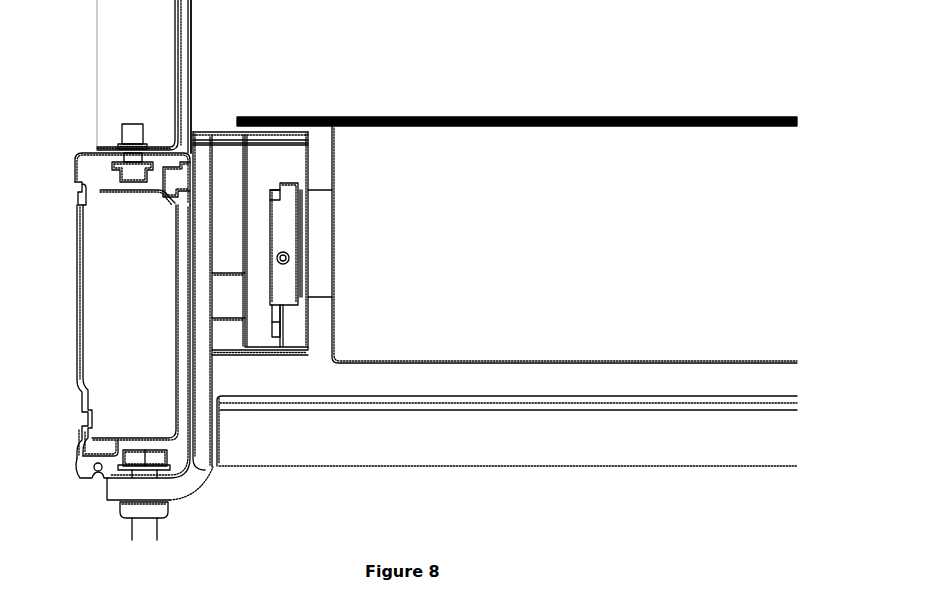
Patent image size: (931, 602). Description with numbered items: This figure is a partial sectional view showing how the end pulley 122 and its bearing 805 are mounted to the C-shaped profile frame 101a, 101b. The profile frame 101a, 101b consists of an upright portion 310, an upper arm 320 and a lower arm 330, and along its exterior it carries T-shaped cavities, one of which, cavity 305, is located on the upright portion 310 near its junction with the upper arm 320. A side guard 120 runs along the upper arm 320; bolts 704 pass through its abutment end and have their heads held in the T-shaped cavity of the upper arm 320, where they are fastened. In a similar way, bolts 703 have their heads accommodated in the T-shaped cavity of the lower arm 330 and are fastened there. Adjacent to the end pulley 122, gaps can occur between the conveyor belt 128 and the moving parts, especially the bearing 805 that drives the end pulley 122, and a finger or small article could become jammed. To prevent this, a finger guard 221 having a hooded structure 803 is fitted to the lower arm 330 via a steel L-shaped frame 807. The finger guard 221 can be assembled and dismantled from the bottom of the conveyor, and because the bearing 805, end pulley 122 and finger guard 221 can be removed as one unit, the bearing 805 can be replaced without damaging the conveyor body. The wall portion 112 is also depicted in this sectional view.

The side guard 120 is at (147, 71).
The bolt 704 is at (132, 138).
The upper arm 320 is at (86, 152).
The T-shaped cavity 305 is at (180, 183).
The upright portion 310 is at (178, 263).
The side wall 112 is at (83, 278).
The lower arm 330 is at (112, 473).
The profile frame 101a is at (75, 433).
The profile frame 101b is at (52, 480).
The bolt 703 is at (148, 453).
The L-shaped frame 807 is at (207, 467).
The finger guard 221 is at (212, 165).
The hooded structure 803 is at (227, 200).
The bearing 805 is at (258, 263).
The conveyor belt 128 is at (334, 117).
The end pulley 122 is at (493, 173).